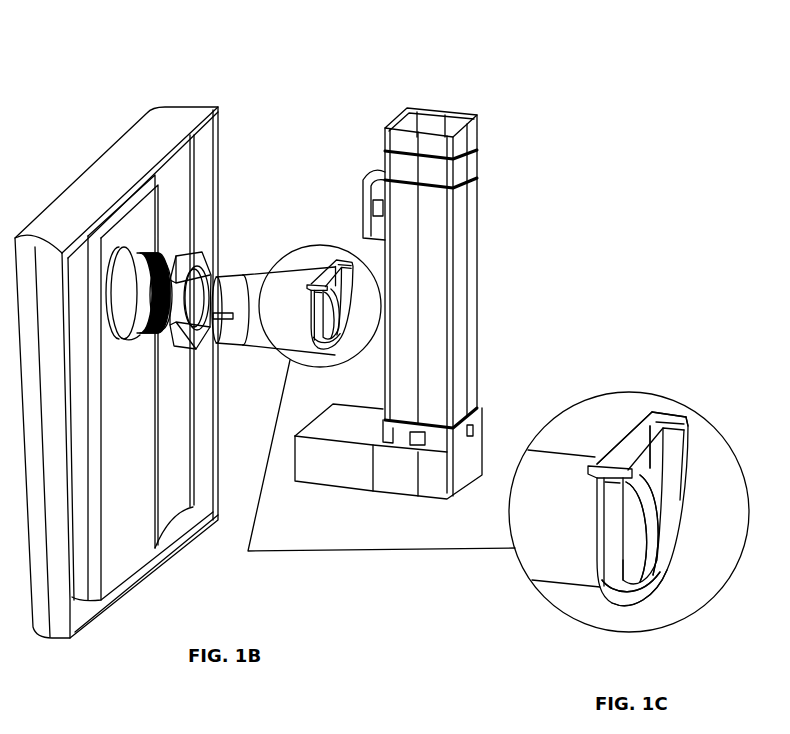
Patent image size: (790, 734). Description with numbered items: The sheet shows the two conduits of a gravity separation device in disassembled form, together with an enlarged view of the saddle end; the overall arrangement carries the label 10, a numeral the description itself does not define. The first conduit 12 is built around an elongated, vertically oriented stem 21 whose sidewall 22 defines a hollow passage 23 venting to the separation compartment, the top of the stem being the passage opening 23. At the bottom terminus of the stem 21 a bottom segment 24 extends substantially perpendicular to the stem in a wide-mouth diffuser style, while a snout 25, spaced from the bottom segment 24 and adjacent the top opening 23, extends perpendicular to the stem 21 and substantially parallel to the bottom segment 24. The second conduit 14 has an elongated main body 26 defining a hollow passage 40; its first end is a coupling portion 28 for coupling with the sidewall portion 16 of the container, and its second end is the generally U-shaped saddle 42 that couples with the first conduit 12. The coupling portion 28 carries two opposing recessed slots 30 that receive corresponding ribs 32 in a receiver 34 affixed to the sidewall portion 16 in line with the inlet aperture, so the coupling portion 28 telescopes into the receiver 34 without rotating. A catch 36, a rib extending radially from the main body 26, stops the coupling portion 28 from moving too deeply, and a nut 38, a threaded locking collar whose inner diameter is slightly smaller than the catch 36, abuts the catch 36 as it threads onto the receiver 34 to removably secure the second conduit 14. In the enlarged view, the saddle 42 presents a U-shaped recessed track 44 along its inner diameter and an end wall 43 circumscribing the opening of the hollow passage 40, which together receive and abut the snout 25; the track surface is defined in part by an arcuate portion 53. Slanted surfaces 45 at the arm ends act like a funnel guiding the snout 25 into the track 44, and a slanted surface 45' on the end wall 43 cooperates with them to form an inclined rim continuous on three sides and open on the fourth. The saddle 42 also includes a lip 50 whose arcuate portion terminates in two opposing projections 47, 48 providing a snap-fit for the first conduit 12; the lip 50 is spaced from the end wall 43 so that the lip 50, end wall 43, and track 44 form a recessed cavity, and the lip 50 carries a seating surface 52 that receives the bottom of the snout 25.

In FIG. 1B, the downspout system 10 is at (313, 92).
In FIG. 1B, the first conduit 12 is at (420, 292).
In FIG. 1B, the second conduit 14 is at (273, 313).
In FIG. 1B, the sidewall portion 16 is at (185, 127).
In FIG. 1B, the stem 21 is at (463, 297).
In FIG. 1B, the sidewall 22 is at (430, 110).
In FIG. 1B, the hollow passage 23 is at (422, 112).
In FIG. 1B, the bottom segment 24 is at (345, 467).
In FIG. 1B, the snout 25 is at (375, 167).
In FIG. 1B, the main body 26 is at (258, 288).
In FIG. 1C, the main body 26 is at (545, 472).
In FIG. 1B, the coupling portion 28 is at (236, 268).
In FIG. 1B, the recessed slots 30 is at (228, 318).
In FIG. 1B, the ribs 32 is at (157, 268).
In FIG. 1B, the receiver 34 is at (140, 334).
In FIG. 1B, the catch 36 is at (243, 342).
In FIG. 1B, the nut 38 is at (192, 250).
In FIG. 1C, the hollow passage 40 is at (637, 522).
In FIG. 1B, the saddle 42 is at (333, 260).
In FIG. 1C, the saddle 42 is at (633, 424).
In FIG. 1C, the end wall 43 is at (650, 467).
In FIG. 1C, the track 44 is at (664, 450).
In FIG. 1C, the slanted surface 45 is at (699, 406).
In FIG. 1C, the slanted surface 45' is at (620, 432).
In FIG. 1C, the projection 47 is at (677, 488).
In FIG. 1C, the projection 48 is at (647, 534).
In FIG. 1C, the lip 50 is at (632, 563).
In FIG. 1C, the seating surface 52 is at (667, 562).
In FIG. 1C, the arcuate portion 53 is at (647, 580).